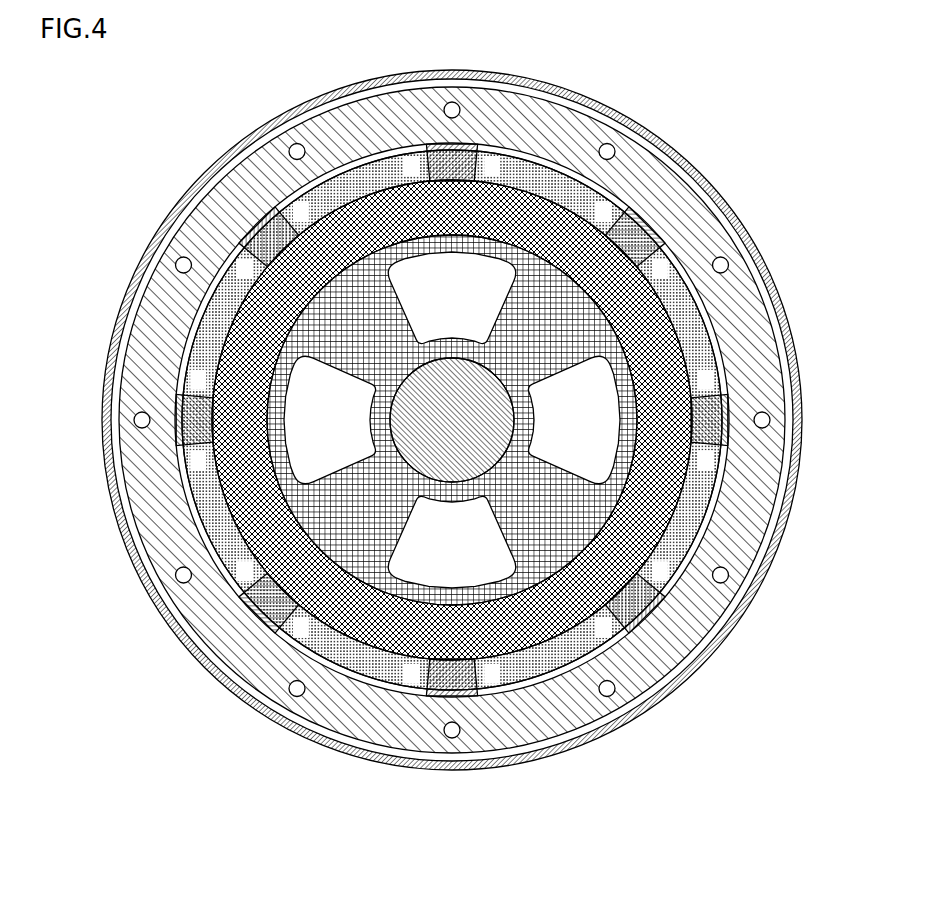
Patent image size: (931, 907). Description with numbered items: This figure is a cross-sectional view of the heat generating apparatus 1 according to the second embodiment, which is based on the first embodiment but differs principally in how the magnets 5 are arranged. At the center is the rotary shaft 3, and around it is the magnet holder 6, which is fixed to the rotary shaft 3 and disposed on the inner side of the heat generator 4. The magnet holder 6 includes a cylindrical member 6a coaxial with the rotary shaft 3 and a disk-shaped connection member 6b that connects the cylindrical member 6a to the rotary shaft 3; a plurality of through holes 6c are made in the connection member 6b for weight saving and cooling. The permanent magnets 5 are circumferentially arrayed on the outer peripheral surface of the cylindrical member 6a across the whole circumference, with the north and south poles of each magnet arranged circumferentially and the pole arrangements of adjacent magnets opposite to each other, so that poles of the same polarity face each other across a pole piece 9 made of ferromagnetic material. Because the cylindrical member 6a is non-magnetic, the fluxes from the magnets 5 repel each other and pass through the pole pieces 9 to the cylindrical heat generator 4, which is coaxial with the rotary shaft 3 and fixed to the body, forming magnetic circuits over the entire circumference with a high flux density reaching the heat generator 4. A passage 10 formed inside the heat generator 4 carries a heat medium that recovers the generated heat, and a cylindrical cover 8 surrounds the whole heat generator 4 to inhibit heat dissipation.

The heat generating apparatus 1 is at (262, 98).
The rotary shaft 3 is at (406, 462).
The heat generator 4 is at (675, 160).
The permanent magnet 5 is at (703, 317).
The magnet holder 6 is at (72, 510).
The cylindrical member 6a is at (293, 453).
The connection member 6b is at (205, 490).
The through hole 6c is at (235, 478).
The cover 8 is at (582, 92).
The pole piece 9 is at (653, 217).
The passage 10 is at (612, 133).